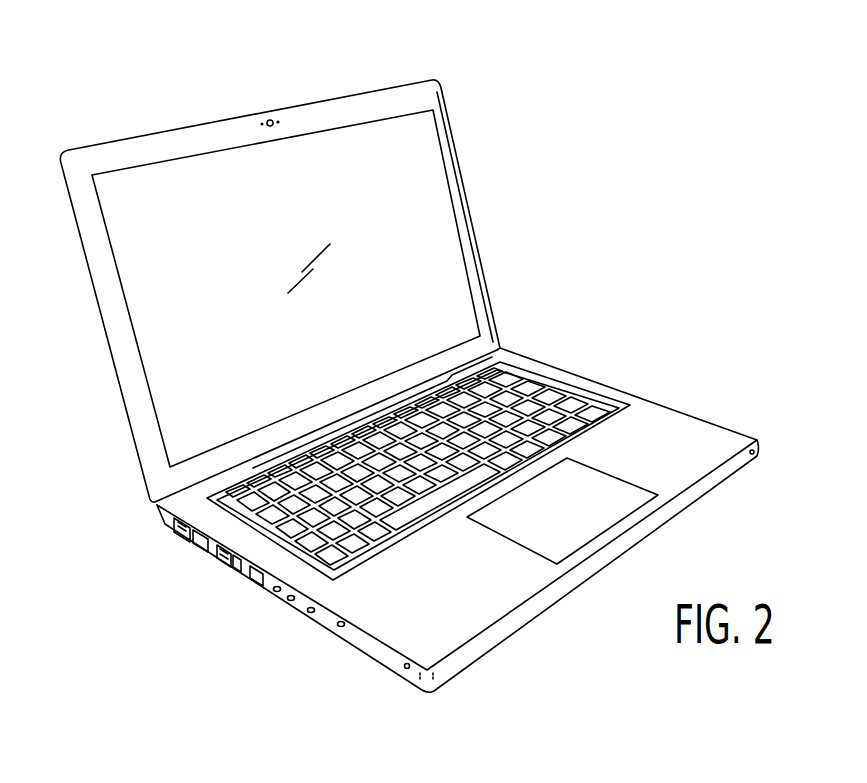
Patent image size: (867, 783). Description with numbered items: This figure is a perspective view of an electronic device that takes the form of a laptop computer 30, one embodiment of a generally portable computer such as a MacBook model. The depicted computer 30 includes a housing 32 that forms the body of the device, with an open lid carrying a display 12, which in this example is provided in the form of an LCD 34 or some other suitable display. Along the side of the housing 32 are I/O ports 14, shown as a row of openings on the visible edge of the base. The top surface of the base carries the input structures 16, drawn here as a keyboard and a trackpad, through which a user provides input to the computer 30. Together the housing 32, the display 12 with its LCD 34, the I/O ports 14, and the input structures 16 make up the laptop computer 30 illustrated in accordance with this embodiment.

The laptop computer 30 is at (222, 65).
The display 12 is at (449, 220).
The LCD 34 is at (437, 177).
The housing 32 is at (675, 408).
The I/O ports 14 is at (191, 544).
The input structures 16 is at (557, 393).